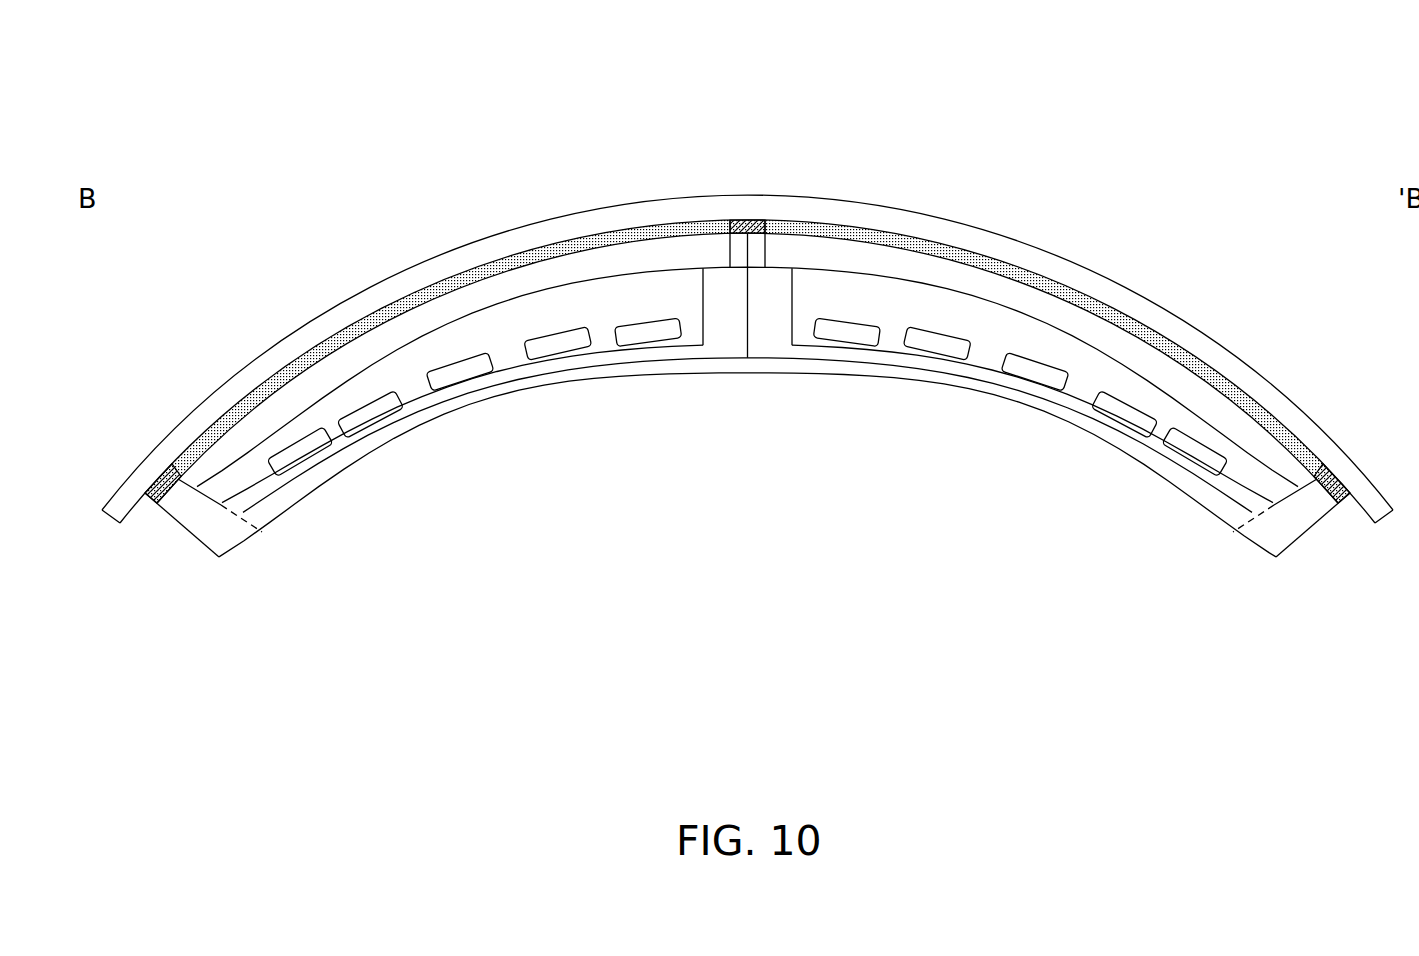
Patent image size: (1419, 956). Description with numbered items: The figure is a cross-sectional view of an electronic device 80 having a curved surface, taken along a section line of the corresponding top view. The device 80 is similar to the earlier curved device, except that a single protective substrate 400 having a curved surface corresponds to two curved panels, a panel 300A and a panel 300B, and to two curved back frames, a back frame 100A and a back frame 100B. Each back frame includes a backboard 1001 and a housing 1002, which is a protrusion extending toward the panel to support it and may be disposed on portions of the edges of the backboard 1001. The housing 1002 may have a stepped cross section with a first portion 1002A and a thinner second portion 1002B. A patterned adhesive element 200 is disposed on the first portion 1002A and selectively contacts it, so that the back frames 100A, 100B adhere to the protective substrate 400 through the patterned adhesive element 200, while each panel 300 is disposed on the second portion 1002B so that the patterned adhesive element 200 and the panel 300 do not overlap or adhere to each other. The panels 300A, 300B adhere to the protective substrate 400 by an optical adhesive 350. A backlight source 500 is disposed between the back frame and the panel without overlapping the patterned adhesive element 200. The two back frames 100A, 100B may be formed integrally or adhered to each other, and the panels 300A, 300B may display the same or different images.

The electronic device 80 is at (163, 112).
The patterned adhesive element 200 is at (742, 221).
The panel 300 is at (900, 265).
The panel 300A is at (505, 290).
The panel 300B is at (990, 290).
The optical adhesive 350 is at (1095, 305).
The protective substrate 400 is at (1180, 330).
The backlight source 500 is at (288, 440).
The back frame 100A is at (422, 422).
The back frame 100B is at (1073, 422).
The backboard 1001 is at (510, 390).
The housing 1002 is at (725, 332).
The first portion 1002A is at (185, 515).
The second portion 1002B is at (242, 514).